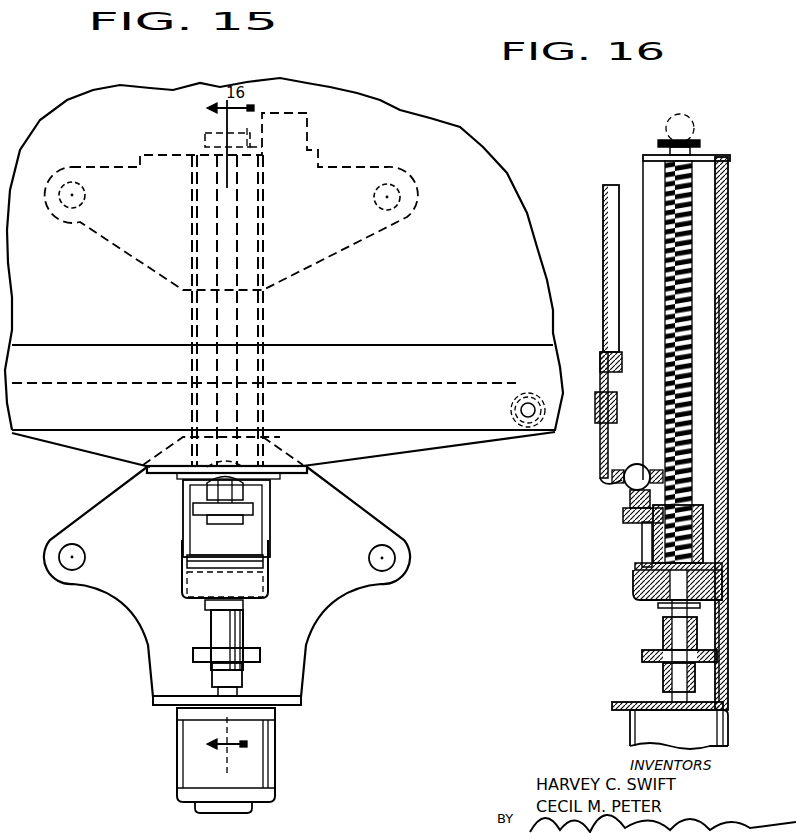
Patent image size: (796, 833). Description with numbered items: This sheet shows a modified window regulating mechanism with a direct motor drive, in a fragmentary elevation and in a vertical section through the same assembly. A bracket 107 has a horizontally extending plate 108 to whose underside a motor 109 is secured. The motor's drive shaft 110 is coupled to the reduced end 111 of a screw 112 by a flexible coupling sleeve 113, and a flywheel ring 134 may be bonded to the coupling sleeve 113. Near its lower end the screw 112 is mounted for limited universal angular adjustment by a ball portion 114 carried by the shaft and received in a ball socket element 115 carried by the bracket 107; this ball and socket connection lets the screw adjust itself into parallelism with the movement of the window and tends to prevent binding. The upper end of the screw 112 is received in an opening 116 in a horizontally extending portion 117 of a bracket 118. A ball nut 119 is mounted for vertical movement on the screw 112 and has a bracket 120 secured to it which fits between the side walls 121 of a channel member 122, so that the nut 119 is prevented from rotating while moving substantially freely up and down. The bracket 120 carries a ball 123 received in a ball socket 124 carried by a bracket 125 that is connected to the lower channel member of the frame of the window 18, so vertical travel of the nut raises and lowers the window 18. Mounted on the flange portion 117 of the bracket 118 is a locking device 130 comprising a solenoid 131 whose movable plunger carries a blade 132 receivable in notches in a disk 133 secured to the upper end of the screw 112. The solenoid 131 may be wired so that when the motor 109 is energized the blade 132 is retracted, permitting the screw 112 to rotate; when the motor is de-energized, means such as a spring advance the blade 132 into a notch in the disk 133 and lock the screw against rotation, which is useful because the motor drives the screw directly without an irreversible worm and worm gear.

In FIG. 15, the window 18 is at (462, 175).
In FIG. 16, the window 18 is at (605, 220).
In FIG. 15, the bracket 107 is at (345, 523).
In FIG. 16, the bracket 107 is at (726, 606).
In FIG. 15, the horizontally extending plate 108 is at (300, 708).
In FIG. 16, the horizontally extending plate 108 is at (625, 702).
In FIG. 15, the motor 109 is at (265, 752).
In FIG. 16, the motor 109 is at (632, 718).
In FIG. 15, the drive shaft 110 is at (240, 698).
In FIG. 16, the drive shaft 110 is at (678, 683).
In FIG. 15, the reduced end 111 is at (243, 612).
In FIG. 16, the reduced end 111 is at (678, 612).
In FIG. 15, the screw 112 is at (186, 297).
In FIG. 16, the screw 112 is at (689, 405).
In FIG. 15, the flexible coupling sleeve 113 is at (218, 633).
In FIG. 16, the flexible coupling sleeve 113 is at (698, 638).
In FIG. 16, the ball portion 114 is at (710, 578).
In FIG. 15, the ball socket element 115 is at (252, 586).
In FIG. 16, the ball socket element 115 is at (632, 590).
In FIG. 16, the opening 116 is at (645, 158).
In FIG. 15, the horizontally extending portion 117 is at (173, 160).
In FIG. 16, the horizontally extending portion 117 is at (705, 160).
In FIG. 15, the bracket 118 is at (350, 167).
In FIG. 16, the bracket 118 is at (729, 197).
In FIG. 15, the ball nut 119 is at (247, 537).
In FIG. 16, the ball nut 119 is at (655, 538).
In FIG. 16, the bracket 120 is at (628, 508).
In FIG. 15, the side walls 121 is at (266, 325).
In FIG. 16, the side walls 121 is at (650, 415).
In FIG. 16, the channel member 122 is at (719, 332).
In FIG. 16, the ball 123 is at (615, 481).
In FIG. 15, the ball socket 124 is at (210, 490).
In FIG. 16, the ball socket 124 is at (648, 465).
In FIG. 15, the bracket 125 is at (135, 452).
In FIG. 16, the bracket 125 is at (599, 447).
In FIG. 15, the locking device 130 is at (287, 113).
In FIG. 16, the locking device 130 is at (697, 131).
In FIG. 15, the solenoid 131 is at (310, 136).
In FIG. 16, the solenoid 131 is at (680, 128).
In FIG. 15, the blade 132 is at (260, 127).
In FIG. 16, the blade 132 is at (690, 122).
In FIG. 15, the disk 133 is at (206, 134).
In FIG. 16, the disk 133 is at (660, 142).
In FIG. 15, the flywheel ring 134 is at (266, 657).
In FIG. 16, the flywheel ring 134 is at (650, 655).